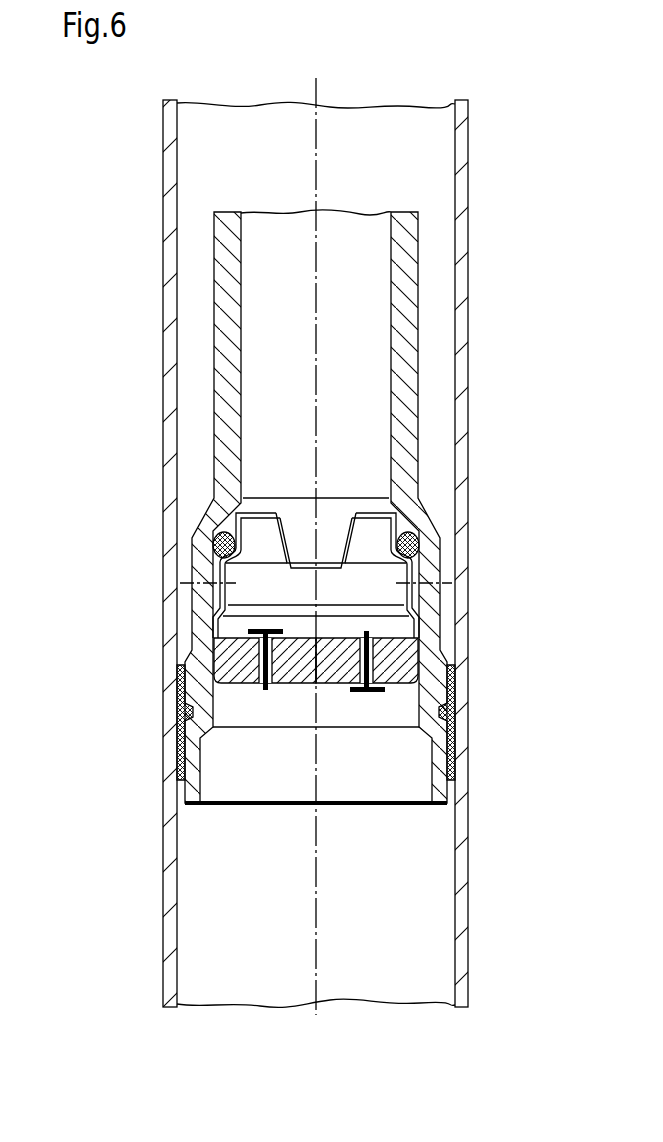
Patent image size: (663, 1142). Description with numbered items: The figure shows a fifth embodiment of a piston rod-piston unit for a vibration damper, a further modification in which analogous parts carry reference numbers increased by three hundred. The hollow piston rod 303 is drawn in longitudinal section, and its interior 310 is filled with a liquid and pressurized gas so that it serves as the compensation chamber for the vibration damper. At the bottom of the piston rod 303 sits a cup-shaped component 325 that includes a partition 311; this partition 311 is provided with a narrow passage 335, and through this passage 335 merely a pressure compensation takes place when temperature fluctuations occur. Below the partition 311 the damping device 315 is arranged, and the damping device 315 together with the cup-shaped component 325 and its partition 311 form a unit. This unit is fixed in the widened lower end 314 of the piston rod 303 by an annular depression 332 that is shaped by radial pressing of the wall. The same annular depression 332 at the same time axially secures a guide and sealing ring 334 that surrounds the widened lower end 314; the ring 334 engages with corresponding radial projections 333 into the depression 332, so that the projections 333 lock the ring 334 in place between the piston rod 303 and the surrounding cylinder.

The piston rod 303 is at (403, 276).
The interior of the piston rod 310 is at (275, 388).
The partition 311 is at (238, 512).
The narrow passage 335 is at (318, 566).
The cup-shaped component 325 is at (215, 610).
The widened lower end of the piston rod 314 is at (195, 657).
The damping device 315 is at (397, 655).
The radial projections 333 is at (178, 712).
The guide and sealing ring 334 is at (455, 752).
The annular depression 332 is at (198, 732).